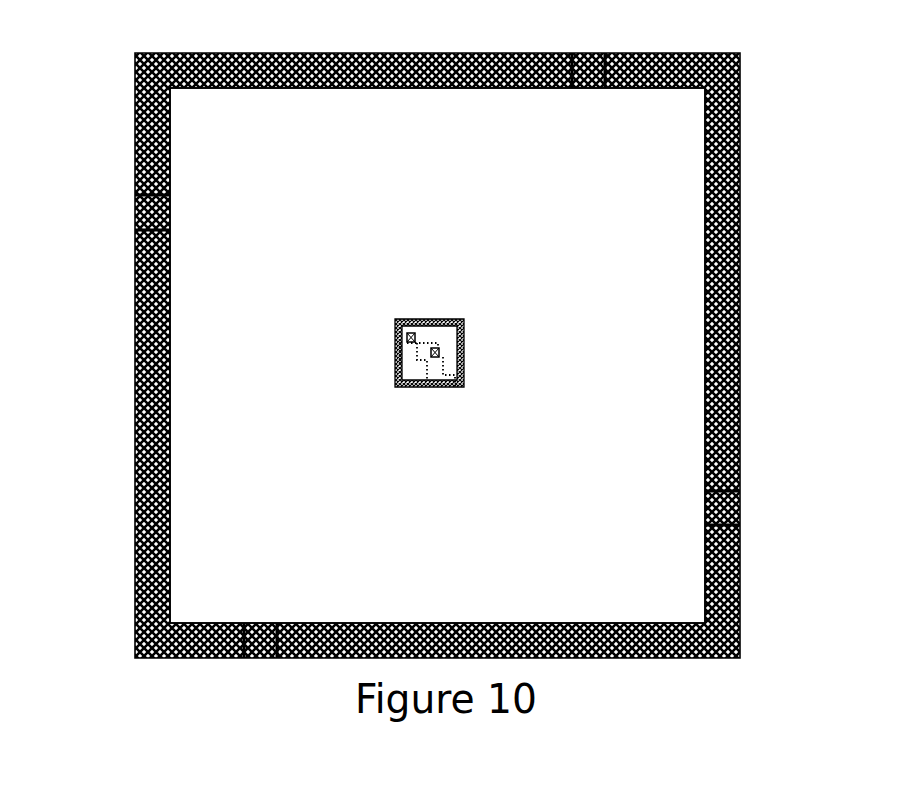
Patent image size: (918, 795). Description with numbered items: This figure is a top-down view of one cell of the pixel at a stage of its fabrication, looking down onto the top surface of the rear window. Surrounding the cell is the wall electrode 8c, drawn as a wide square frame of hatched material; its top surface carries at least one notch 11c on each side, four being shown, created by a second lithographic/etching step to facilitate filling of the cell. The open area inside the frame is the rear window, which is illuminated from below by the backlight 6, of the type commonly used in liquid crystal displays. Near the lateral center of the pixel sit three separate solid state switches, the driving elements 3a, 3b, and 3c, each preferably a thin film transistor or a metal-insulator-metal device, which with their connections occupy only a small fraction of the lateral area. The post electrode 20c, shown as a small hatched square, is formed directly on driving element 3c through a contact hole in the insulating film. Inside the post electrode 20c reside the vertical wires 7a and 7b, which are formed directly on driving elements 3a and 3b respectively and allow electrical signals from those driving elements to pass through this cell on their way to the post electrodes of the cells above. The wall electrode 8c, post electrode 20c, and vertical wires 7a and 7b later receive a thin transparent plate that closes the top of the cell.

The backlight 6 is at (210, 523).
The wall electrode 8c is at (135, 417).
The notch 11c is at (590, 52).
The post electrode 20c is at (400, 346).
The vertical wire 7a is at (407, 335).
The vertical wire 7b is at (440, 352).
The driving element 3a is at (395, 369).
The driving element 3b is at (427, 380).
The driving element 3c is at (455, 387).